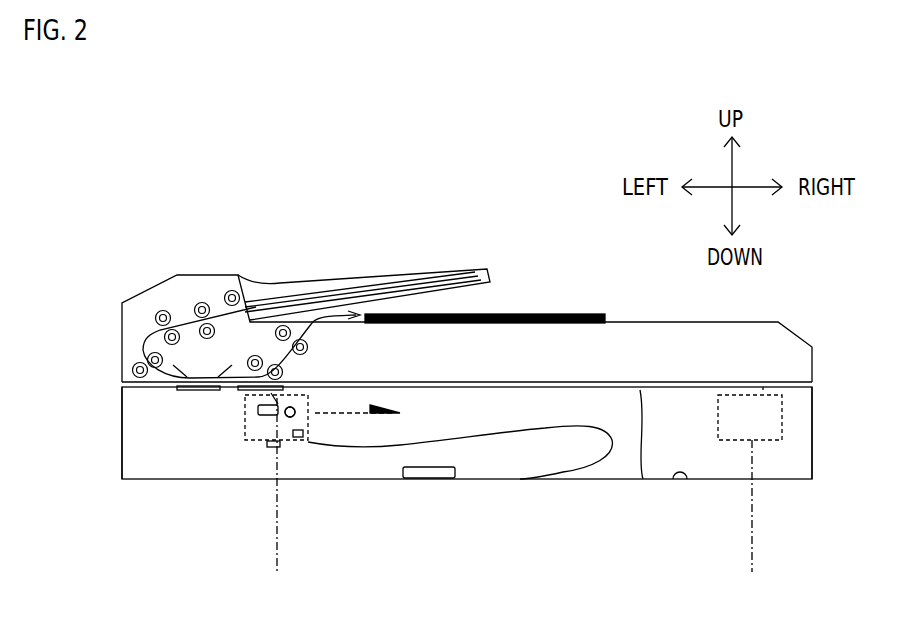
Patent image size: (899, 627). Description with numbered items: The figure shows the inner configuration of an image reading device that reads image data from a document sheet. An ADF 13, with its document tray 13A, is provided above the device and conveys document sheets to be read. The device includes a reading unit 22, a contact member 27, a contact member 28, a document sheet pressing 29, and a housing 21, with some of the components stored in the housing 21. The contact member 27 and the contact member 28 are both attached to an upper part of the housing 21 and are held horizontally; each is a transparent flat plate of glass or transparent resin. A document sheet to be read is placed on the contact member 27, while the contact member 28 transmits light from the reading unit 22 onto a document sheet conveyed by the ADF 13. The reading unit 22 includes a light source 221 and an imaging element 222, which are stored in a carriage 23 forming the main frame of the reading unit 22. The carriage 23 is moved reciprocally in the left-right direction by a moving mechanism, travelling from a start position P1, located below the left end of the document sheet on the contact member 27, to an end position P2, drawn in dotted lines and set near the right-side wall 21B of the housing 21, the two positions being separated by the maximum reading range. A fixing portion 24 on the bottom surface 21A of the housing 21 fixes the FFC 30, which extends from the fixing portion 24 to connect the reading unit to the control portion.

The ADF 13 is at (122, 322).
The document tray 13A is at (320, 278).
The housing 21 is at (813, 432).
The bottom surface 21A is at (685, 480).
The right-side wall 21B is at (805, 405).
The reading unit 22 is at (230, 465).
The carriage 23 is at (244, 417).
The fixing portion 24 is at (401, 472).
The contact member 27 is at (643, 479).
The contact member 28 is at (187, 390).
The document sheet pressing 29 is at (623, 322).
The FFC 30 is at (583, 471).
The light source 221 is at (291, 418).
The imaging element 222 is at (268, 448).
The start position P1 is at (278, 498).
The end position P2 is at (754, 519).